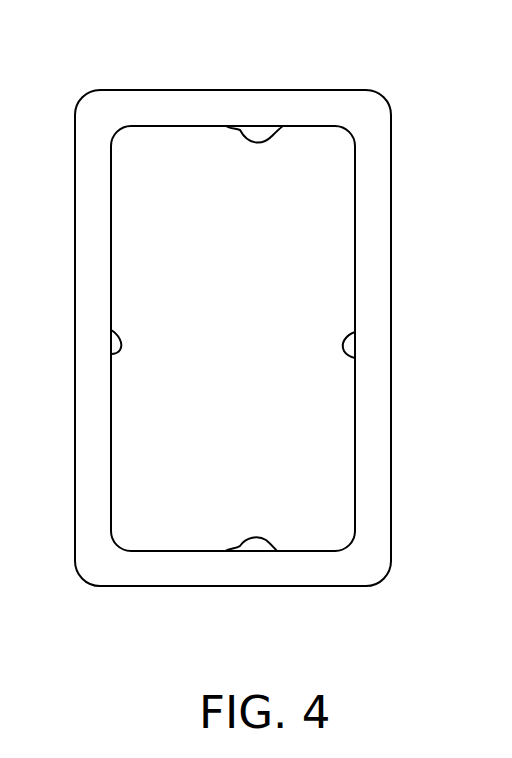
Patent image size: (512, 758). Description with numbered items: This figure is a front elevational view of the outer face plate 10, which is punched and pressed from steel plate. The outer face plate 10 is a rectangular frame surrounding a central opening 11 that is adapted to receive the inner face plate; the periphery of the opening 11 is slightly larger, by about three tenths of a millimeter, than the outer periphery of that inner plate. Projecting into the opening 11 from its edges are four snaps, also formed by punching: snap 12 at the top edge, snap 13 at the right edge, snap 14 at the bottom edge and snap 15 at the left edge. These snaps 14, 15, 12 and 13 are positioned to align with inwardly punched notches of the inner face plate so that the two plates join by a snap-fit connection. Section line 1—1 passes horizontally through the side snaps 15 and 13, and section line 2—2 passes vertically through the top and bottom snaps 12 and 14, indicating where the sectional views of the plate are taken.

The outer face plate 10 is at (372, 156).
The opening 11 is at (246, 308).
The snap 12 is at (272, 137).
The snap 13 is at (343, 346).
The snap 14 is at (268, 540).
The snap 15 is at (119, 352).
The section line 1— 1 is at (62, 339).
The section line 2— 2 is at (233, 80).